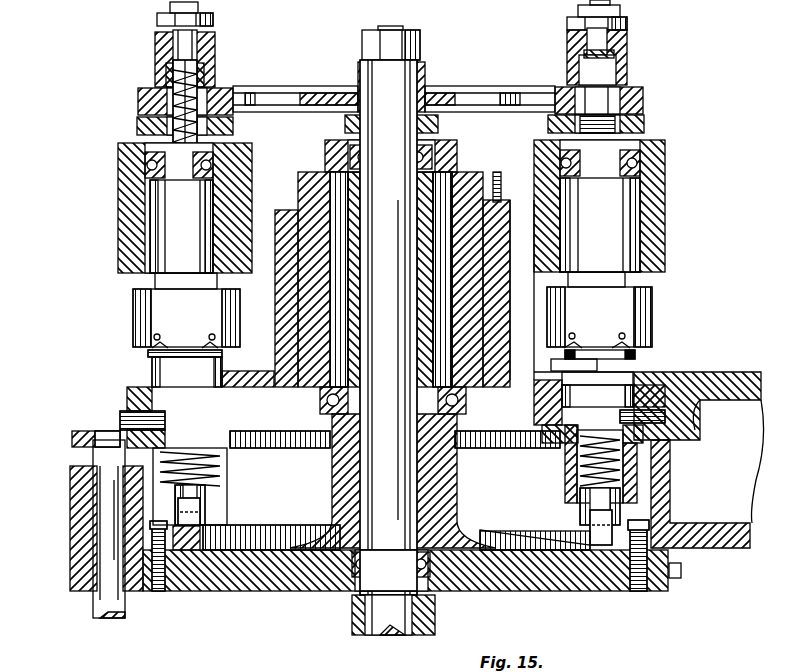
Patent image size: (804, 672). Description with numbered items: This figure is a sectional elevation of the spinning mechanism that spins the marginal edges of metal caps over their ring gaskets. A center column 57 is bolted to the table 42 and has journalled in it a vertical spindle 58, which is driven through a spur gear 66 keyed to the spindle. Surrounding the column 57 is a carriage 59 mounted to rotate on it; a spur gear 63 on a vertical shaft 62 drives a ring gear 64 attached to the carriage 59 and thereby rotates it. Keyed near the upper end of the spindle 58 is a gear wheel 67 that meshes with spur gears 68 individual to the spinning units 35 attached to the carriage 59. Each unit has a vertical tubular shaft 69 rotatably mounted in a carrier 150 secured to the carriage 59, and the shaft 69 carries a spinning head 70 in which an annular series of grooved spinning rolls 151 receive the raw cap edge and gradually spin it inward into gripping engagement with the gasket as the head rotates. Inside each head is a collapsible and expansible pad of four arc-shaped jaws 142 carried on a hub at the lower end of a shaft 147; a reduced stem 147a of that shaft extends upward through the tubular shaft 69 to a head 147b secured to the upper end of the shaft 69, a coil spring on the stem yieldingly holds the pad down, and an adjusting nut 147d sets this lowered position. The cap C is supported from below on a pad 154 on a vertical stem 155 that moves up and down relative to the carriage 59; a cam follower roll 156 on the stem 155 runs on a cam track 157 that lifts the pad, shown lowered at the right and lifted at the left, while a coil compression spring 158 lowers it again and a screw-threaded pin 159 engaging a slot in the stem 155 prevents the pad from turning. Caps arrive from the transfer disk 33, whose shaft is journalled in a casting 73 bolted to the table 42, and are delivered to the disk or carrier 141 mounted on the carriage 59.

The adjusting nut 147d is at (213, 18).
The head 147b is at (215, 40).
The reduced stem 147a is at (643, 55).
The shaft 147 is at (178, 214).
The spur gear 68 is at (138, 100).
The gear wheel 67 is at (440, 95).
The spinning unit 35 is at (668, 150).
The vertical tubular shaft 69 is at (165, 185).
The carrier 150 is at (120, 205).
The spinning head 70 is at (150, 306).
The spinning rolls 151 is at (205, 346).
The arc-shaped jaws 142 is at (636, 358).
The cap C is at (148, 355).
The pad 154 is at (170, 370).
The disk or carrier 141 is at (248, 374).
The center column 57 is at (340, 470).
The vertical spindle 58 is at (395, 478).
The carriage 59 is at (498, 292).
The table 42 is at (222, 582).
The spur gear 66 is at (362, 612).
The spur gear 63 is at (72, 441).
The vertical shaft 62 is at (100, 605).
The coil compression spring 158 is at (205, 456).
The vertical stem 155 is at (205, 488).
The cam follower roll 156 is at (200, 512).
The cam track 157 is at (535, 532).
The transfer disk 33 is at (718, 372).
The casting 73 is at (720, 530).
The screw-threaded pin 159 is at (665, 416).
The ring gear 64 is at (643, 434).